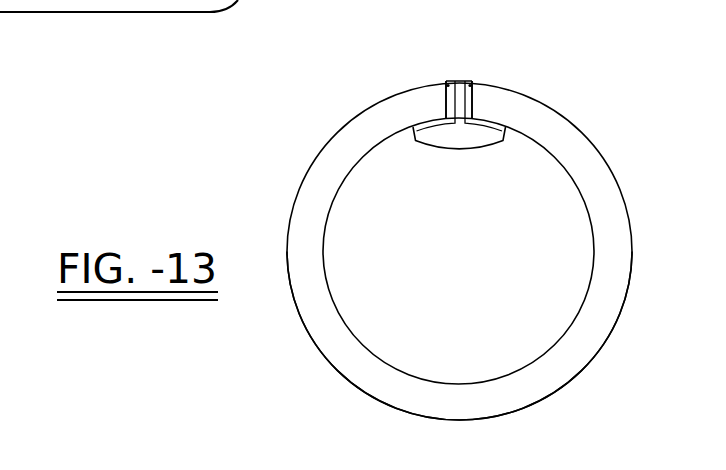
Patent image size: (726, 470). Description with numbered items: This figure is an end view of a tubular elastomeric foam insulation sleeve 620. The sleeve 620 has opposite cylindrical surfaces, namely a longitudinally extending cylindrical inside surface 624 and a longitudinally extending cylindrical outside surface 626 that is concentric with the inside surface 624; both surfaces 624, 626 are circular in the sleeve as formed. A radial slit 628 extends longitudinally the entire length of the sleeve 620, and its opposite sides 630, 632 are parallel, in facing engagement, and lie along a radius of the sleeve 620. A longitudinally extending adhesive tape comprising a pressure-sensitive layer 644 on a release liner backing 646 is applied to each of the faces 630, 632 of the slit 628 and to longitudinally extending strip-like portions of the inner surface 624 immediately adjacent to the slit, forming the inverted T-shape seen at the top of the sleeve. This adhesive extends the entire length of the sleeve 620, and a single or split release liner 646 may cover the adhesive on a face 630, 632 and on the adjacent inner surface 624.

The insulation sleeve 620 is at (322, 145).
The inside surface 624 is at (367, 348).
The outside surface 626 is at (315, 345).
The radial slit 628 is at (461, 60).
The side of slit 630 is at (448, 83).
The side of slit 632 is at (470, 82).
The pressure-sensitive layer 644 is at (447, 104).
The release liner backing 646 is at (439, 141).